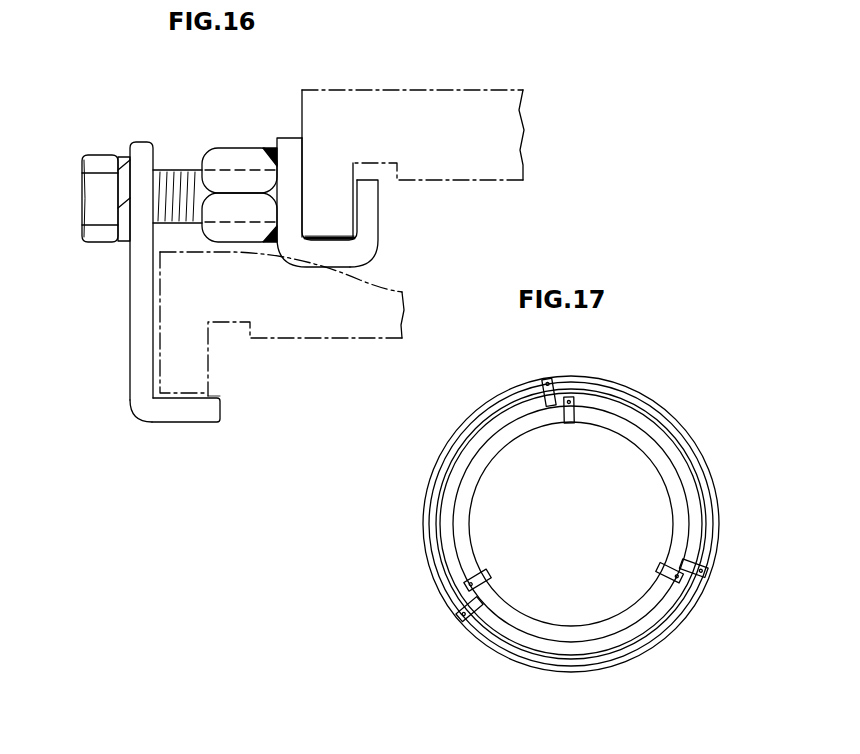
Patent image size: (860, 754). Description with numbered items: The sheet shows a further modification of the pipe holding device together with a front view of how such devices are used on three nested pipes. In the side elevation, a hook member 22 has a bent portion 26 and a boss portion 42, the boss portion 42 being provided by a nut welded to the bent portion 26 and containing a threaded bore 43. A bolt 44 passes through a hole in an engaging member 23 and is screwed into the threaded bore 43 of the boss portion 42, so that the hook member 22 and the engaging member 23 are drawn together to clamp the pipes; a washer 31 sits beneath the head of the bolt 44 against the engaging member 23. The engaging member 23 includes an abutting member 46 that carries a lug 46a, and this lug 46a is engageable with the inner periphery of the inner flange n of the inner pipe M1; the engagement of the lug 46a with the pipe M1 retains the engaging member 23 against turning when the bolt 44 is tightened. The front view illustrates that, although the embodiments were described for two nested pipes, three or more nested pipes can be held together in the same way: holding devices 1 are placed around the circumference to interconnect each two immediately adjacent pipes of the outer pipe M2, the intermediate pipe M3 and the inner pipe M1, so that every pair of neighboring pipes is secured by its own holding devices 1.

In FIG. 17, the holding device 1 is at (571, 397).
In FIG. 16, the hook member 22 is at (288, 163).
In FIG. 16, the engaging member 23 is at (133, 352).
In FIG. 16, the bent portion 26 is at (373, 202).
In FIG. 16, the washer 31 is at (124, 168).
In FIG. 16, the boss portion 42 is at (217, 158).
In FIG. 16, the threaded bore 43 is at (243, 170).
In FIG. 16, the bolt 44 is at (103, 207).
In FIG. 16, the abutting member 46 is at (143, 383).
In FIG. 16, the lug 46a is at (198, 413).
In FIG. 17, the inner pipe M1 is at (678, 542).
In FIG. 16, the outer pipe M2 is at (380, 328).
In FIG. 17, the outer pipe M2 is at (660, 408).
In FIG. 16, the intermediate pipe M3 is at (442, 120).
In FIG. 17, the intermediate pipe M3 is at (690, 485).
In FIG. 16, the inner flange n is at (335, 213).